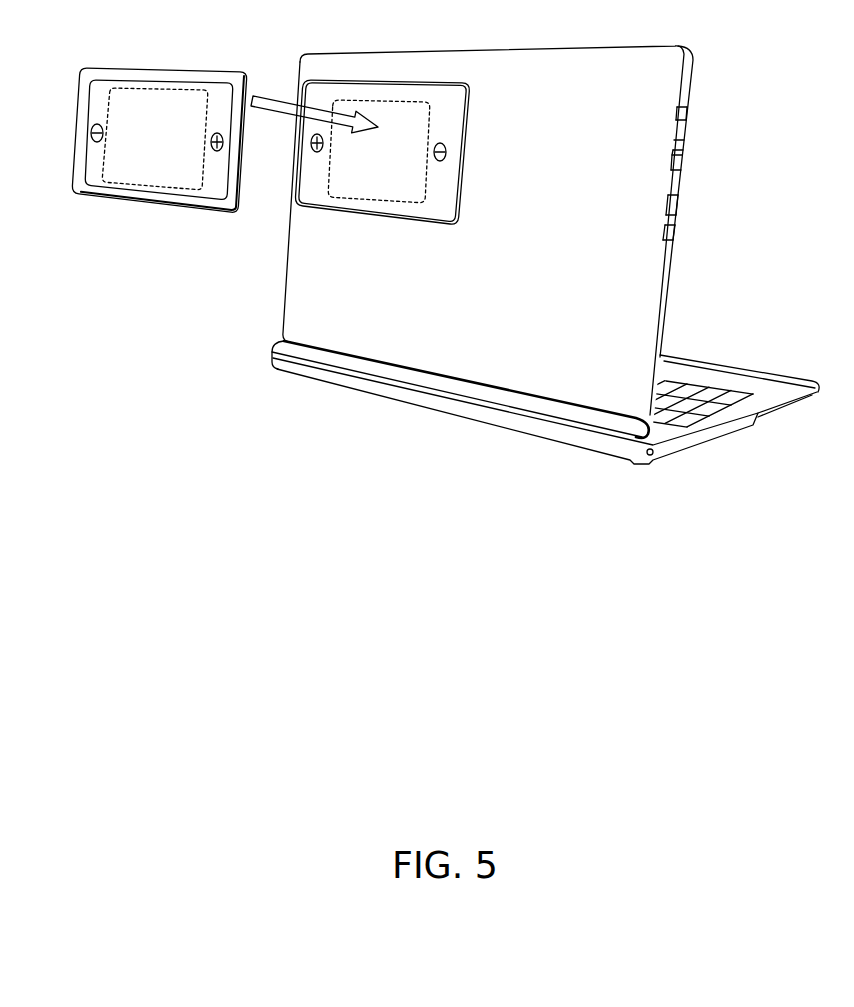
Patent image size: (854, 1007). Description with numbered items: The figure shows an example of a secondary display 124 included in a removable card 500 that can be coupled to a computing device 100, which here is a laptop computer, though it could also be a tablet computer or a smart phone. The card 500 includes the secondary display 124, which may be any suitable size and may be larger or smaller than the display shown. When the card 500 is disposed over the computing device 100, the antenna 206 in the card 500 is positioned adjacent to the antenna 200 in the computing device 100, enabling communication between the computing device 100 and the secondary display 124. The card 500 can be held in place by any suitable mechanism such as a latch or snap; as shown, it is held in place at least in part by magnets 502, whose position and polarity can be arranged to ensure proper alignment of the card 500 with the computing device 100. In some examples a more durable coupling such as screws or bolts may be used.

The computing device 100 is at (541, 470).
The antenna 200 is at (398, 204).
The magnets 502 is at (450, 134).
The card 500 is at (146, 134).
The antenna 206 is at (150, 188).
The secondary display 124 is at (192, 88).